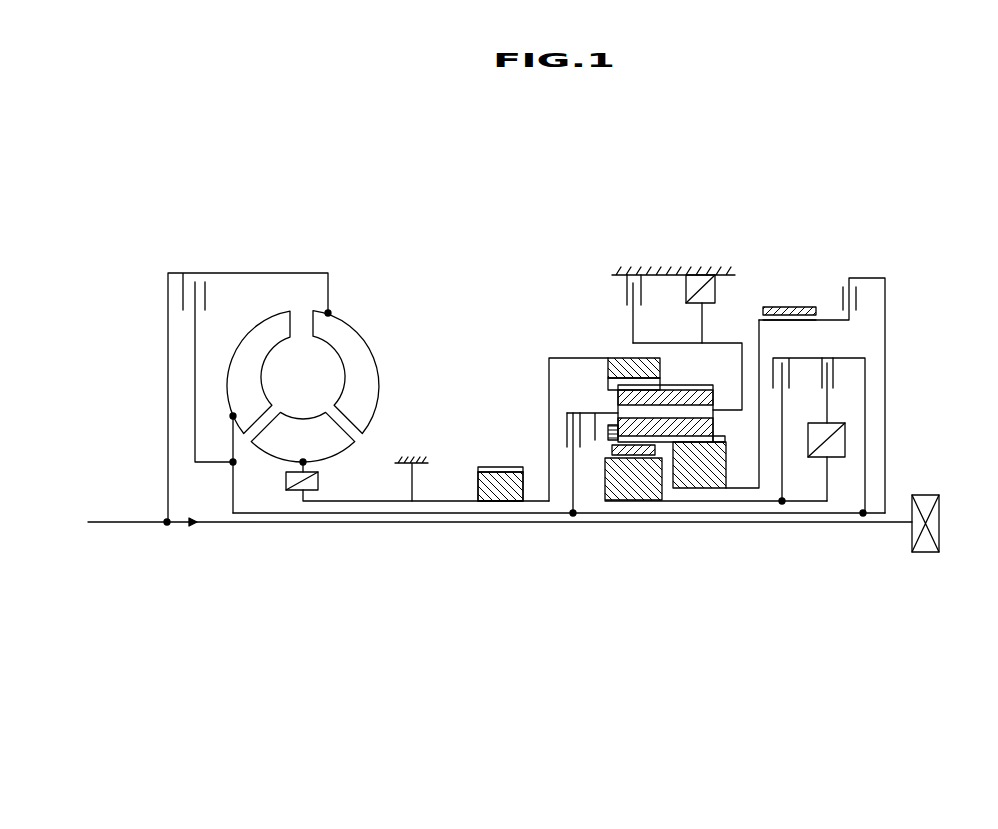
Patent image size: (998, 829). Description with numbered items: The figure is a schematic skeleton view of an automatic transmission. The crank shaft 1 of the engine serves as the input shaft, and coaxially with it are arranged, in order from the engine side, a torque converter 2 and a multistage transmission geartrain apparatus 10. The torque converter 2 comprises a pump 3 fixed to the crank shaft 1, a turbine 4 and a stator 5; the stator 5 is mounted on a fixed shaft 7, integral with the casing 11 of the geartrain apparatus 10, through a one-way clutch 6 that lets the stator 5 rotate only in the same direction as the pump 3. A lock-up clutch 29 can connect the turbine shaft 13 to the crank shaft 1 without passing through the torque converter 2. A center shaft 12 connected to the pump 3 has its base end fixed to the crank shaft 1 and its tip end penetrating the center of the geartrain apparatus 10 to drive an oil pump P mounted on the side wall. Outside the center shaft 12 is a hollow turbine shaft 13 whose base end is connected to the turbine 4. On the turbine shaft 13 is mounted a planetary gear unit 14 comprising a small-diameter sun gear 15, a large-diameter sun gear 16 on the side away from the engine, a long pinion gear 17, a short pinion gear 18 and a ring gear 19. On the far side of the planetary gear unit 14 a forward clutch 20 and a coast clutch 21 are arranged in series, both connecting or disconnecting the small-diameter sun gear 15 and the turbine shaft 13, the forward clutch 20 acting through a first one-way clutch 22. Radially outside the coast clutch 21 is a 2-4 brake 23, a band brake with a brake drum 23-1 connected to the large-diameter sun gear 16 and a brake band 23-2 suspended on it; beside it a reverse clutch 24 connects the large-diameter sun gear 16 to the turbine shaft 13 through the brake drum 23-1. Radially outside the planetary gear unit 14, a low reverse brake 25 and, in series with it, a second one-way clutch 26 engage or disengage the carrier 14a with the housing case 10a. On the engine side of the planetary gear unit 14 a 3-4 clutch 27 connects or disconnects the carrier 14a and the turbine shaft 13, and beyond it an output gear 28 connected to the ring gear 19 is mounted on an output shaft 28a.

The crank shaft 1 is at (153, 524).
The torque converter 2 is at (323, 373).
The pump 3 is at (353, 323).
The turbine 4 is at (255, 333).
The stator 5 is at (353, 447).
The one-way clutch 6 is at (318, 481).
The fixed shaft 7 is at (392, 502).
The multistage transmission geartrain apparatus 10 is at (802, 196).
The housing case 10a is at (686, 273).
The casing 11 is at (414, 458).
The center shaft 12 is at (549, 524).
The turbine shaft 13 is at (700, 524).
The planetary gear unit 14 is at (537, 334).
The carrier 14a is at (740, 363).
The small-diameter sun gear 15 is at (650, 494).
The large-diameter sun gear 16 is at (727, 460).
The long pinion gear 17 is at (713, 425).
The short pinion gear 18 is at (612, 448).
The ring gear 19 is at (617, 363).
The forward clutch 20 is at (845, 375).
The coast clutch 21 is at (800, 371).
The first one-way clutch 22 is at (845, 440).
The 2-4 brake 23 is at (827, 264).
The brake drum 23-1 is at (800, 320).
The brake band 23-2 is at (780, 307).
The reverse clutch 24 is at (860, 276).
The low reverse brake 25 is at (632, 283).
The second one-way clutch 26 is at (715, 290).
The 3-4 clutch 27 is at (562, 422).
The output gear 28 is at (505, 498).
The output shaft 28a is at (530, 480).
The lock-up clutch 29 is at (176, 295).
The oil pump P is at (912, 533).